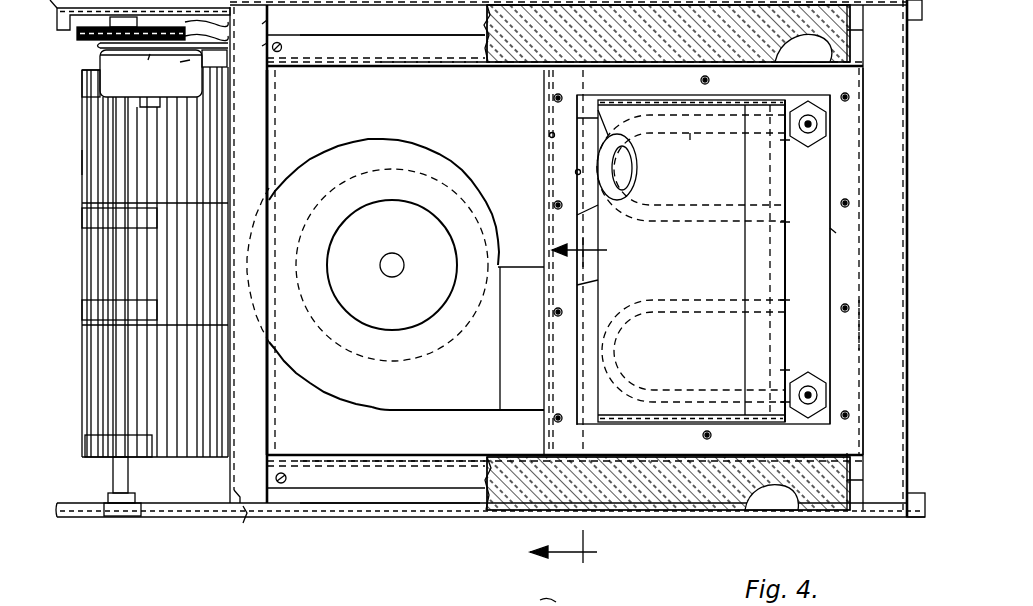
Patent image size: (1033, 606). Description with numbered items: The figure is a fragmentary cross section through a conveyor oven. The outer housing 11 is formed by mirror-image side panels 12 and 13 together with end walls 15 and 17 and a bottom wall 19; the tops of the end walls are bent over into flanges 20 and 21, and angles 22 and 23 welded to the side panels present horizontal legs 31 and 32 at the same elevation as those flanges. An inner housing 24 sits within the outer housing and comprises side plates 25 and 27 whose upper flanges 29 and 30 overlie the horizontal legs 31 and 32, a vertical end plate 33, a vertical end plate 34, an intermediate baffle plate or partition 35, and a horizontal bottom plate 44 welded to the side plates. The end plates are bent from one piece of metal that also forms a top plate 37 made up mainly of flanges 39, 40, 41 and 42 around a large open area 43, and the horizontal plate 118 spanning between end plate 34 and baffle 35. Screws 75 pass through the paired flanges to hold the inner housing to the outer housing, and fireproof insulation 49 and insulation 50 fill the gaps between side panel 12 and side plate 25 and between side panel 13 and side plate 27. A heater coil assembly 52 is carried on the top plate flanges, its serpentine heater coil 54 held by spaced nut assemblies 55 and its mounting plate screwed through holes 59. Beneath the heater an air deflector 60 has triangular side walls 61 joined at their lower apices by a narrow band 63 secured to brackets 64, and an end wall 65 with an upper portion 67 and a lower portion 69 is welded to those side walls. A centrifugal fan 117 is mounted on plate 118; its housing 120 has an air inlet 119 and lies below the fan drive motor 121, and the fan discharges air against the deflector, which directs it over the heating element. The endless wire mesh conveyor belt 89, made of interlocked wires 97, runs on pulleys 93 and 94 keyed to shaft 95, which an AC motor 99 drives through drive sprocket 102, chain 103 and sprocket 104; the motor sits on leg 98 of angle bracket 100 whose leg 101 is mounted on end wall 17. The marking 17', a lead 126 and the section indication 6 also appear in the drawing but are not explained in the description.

The outer housing 11 is at (350, 520).
The side panel 12 is at (92, 518).
The side panel 13 is at (58, 9).
The end wall 15 is at (884, 512).
The end wall 17 is at (193, 255).
The partition wall hidden edge 17' is at (227, 284).
The bottom wall 19 is at (792, 55).
The flange 20 is at (875, 171).
The flange 21 is at (253, 115).
The angle 22 is at (318, 500).
The angle 23 is at (318, 30).
The inner housing 24 is at (864, 275).
The side plate 25 is at (490, 458).
The side plate 27 is at (487, 68).
The flange 29 is at (458, 480).
The flange 30 is at (450, 36).
The horizontal leg 31 is at (400, 500).
The horizontal leg 32 is at (392, 36).
The end plate 33 is at (860, 327).
The vertical end plate 34 is at (275, 430).
The intermediate baffle plate 35 is at (550, 136).
The top plate 37 is at (640, 130).
The flange 39 is at (655, 370).
The flange 40 is at (836, 233).
The flange 41 is at (691, 150).
The flange 42 is at (562, 272).
The open area 43 is at (576, 172).
The horizontal bottom plate 44 is at (587, 210).
The insulation 49 is at (652, 513).
The insulation 50 is at (578, 68).
The heater coil assembly 52 is at (597, 152).
The serpentine heater coil 54 is at (631, 173).
The nut assemblies 55 is at (816, 137).
The holes 59 is at (555, 98).
The air deflector 60 is at (577, 113).
The triangular side walls 61 is at (692, 130).
The narrow band 63 is at (736, 185).
The brackets 64 is at (783, 140).
The end wall 65 is at (701, 250).
The upper portion 67 is at (578, 283).
The lower portion 69 is at (755, 265).
The screws 75 is at (290, 34).
The endless wire mesh conveyor belt 89 is at (82, 370).
The pulley 93 is at (85, 92).
The pulley 94 is at (82, 218).
The shaft 95 is at (113, 473).
The interlocked wires 97 is at (82, 165).
The leg 98 is at (100, 46).
The AC motor 99 is at (160, 96).
The angle bracket 100 is at (148, 60).
The leg 101 is at (202, 60).
The drive sprocket 102 is at (252, 25).
The chain 103 is at (252, 47).
The sprocket 104 is at (77, 36).
The centrifugal fan 117 is at (468, 384).
The horizontal plate 118 is at (395, 104).
The air inlet 119 is at (378, 172).
The fan housing 120 is at (363, 410).
The drive motor 121 is at (365, 305).
The lead 126 is at (529, 600).
The section line 6- 6 is at (576, 405).